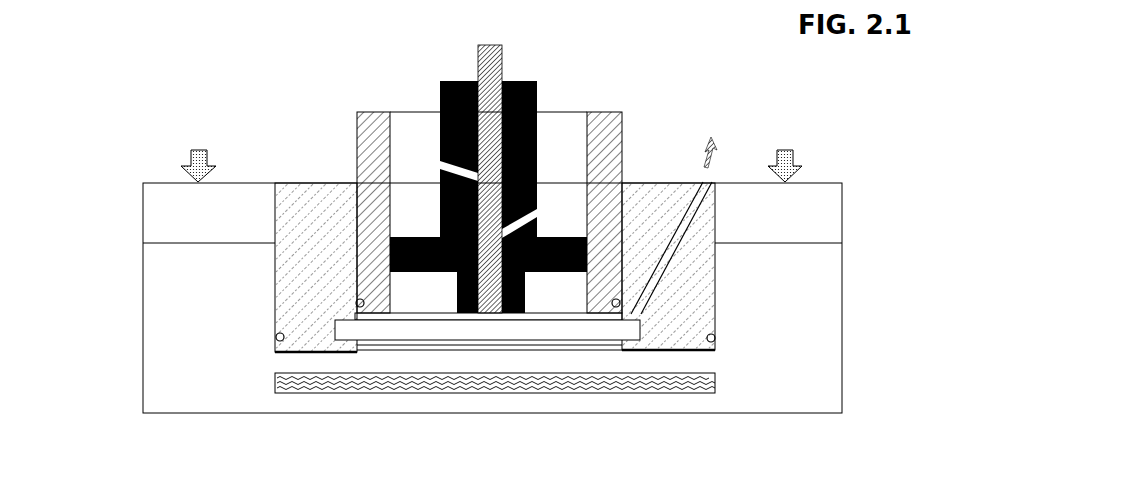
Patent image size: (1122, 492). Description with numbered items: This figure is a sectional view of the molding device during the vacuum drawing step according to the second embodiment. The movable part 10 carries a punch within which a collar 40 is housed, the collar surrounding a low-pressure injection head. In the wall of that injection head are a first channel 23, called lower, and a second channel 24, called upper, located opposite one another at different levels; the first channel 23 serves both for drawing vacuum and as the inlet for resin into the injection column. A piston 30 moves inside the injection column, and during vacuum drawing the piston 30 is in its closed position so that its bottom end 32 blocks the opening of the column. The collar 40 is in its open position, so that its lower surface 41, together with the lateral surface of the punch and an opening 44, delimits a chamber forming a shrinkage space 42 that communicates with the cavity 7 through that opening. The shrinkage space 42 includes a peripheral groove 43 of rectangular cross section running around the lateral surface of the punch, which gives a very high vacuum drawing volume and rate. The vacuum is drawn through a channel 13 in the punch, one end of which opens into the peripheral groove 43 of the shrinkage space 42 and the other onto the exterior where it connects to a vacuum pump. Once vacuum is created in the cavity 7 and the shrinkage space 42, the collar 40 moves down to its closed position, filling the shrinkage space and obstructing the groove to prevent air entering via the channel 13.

The movable part 10 is at (300, 131).
The bottom end of the piston 32 is at (140, 160).
The piston 30 is at (488, 112).
The collar 40 is at (622, 145).
The channel 13 is at (683, 218).
The second channel 24 is at (440, 167).
The peripheral groove 43 is at (343, 328).
The first channel 23 is at (540, 218).
The shrinkage space 42 is at (388, 326).
The lower surface of the collar 41 is at (545, 315).
The cavity 7 is at (345, 357).
The opening 44 is at (488, 352).